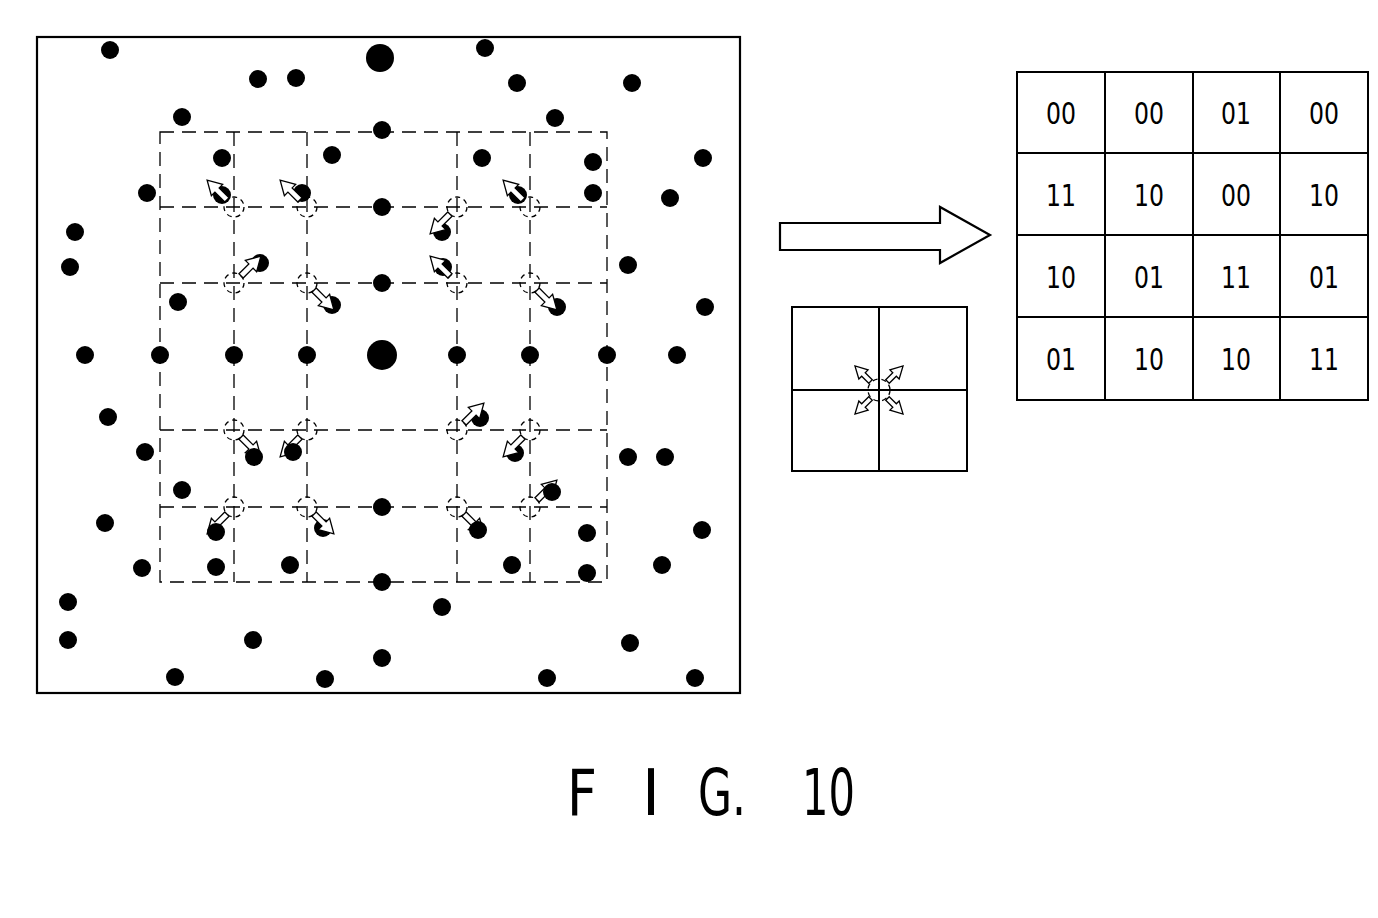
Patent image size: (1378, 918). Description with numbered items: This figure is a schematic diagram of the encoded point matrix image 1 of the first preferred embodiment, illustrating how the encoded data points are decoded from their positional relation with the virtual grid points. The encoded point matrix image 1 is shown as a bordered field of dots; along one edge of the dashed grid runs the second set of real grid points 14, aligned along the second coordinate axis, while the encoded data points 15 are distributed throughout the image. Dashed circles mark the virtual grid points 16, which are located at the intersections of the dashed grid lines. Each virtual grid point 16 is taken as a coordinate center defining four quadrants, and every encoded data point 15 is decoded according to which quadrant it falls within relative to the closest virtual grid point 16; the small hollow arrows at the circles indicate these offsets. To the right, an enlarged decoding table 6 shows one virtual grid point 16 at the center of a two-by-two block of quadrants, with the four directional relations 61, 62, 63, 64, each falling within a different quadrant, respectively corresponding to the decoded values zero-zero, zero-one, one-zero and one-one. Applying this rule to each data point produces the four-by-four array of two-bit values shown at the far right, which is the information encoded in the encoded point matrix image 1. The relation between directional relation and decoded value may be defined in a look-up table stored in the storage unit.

The encoded point matrix image 1 is at (640, 540).
The decoding table 6 is at (938, 467).
The second set of real grid points 14 is at (460, 362).
The encoded data points 15 is at (256, 463).
The virtual grid points 16 is at (521, 275).
The directional relation 61 is at (216, 204).
The directional relation 62 is at (318, 447).
The directional relation 63 is at (323, 288).
The directional relation 64 is at (232, 262).